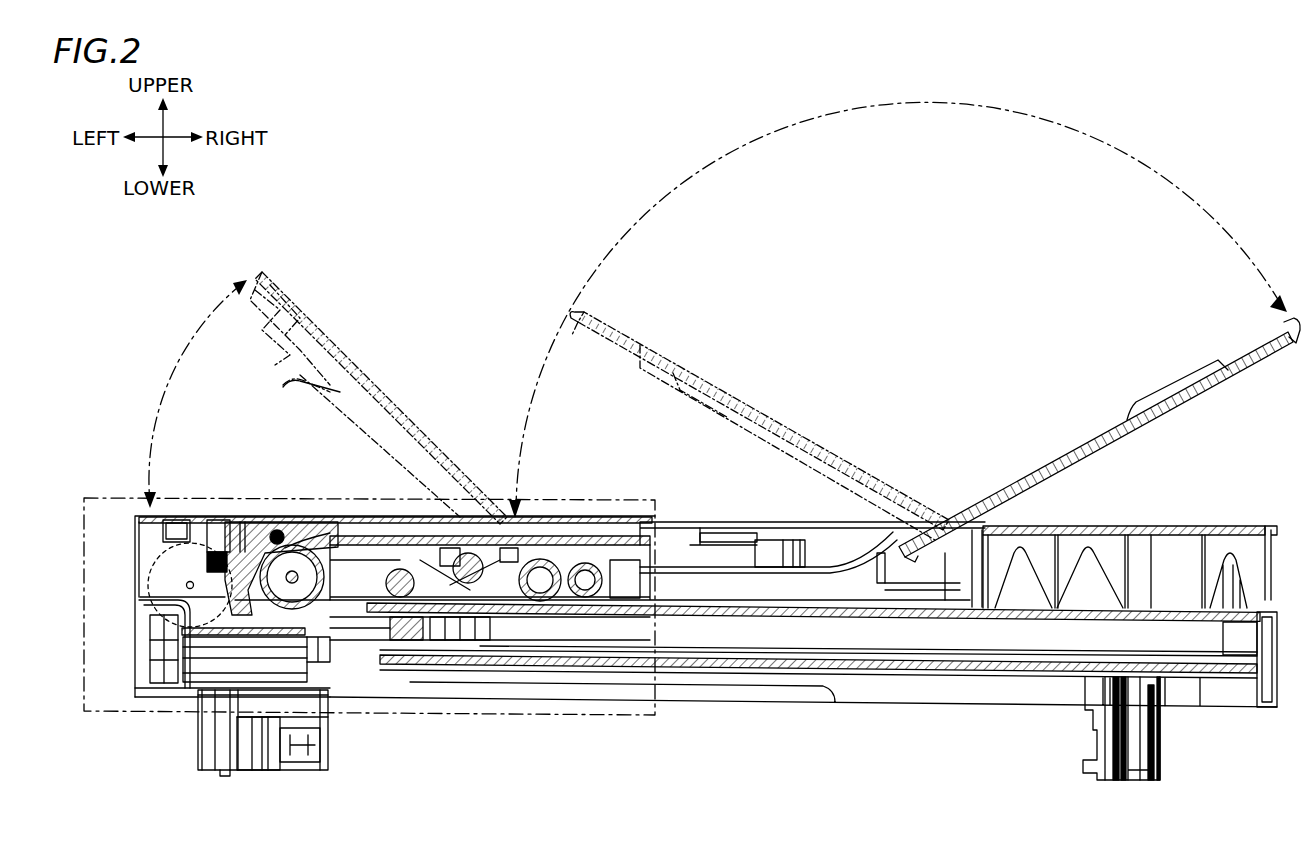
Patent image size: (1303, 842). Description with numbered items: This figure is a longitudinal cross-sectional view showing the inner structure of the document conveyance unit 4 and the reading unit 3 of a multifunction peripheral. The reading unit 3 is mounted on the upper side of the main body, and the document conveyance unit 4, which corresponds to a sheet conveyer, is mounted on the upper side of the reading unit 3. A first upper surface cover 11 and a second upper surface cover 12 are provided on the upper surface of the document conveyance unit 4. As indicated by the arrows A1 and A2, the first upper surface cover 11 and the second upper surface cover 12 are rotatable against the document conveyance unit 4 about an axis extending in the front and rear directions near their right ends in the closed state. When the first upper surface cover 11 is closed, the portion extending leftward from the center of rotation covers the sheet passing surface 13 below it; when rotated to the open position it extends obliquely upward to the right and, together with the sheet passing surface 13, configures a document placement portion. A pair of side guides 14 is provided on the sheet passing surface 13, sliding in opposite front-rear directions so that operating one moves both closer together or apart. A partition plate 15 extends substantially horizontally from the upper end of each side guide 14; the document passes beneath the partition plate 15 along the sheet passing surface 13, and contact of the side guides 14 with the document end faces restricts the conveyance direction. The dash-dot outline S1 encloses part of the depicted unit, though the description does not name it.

The reading unit 3 is at (1181, 697).
The document conveyance unit 4 is at (1187, 527).
The first upper surface cover 11 is at (1000, 490).
The second upper surface cover 12 is at (403, 520).
The sheet passing surface 13 is at (835, 560).
The side guides 14 is at (762, 548).
The partition plate 15 is at (718, 540).
The scanner unit S1 is at (566, 717).
The arrow A1 is at (898, 310).
The arrow A2 is at (195, 394).